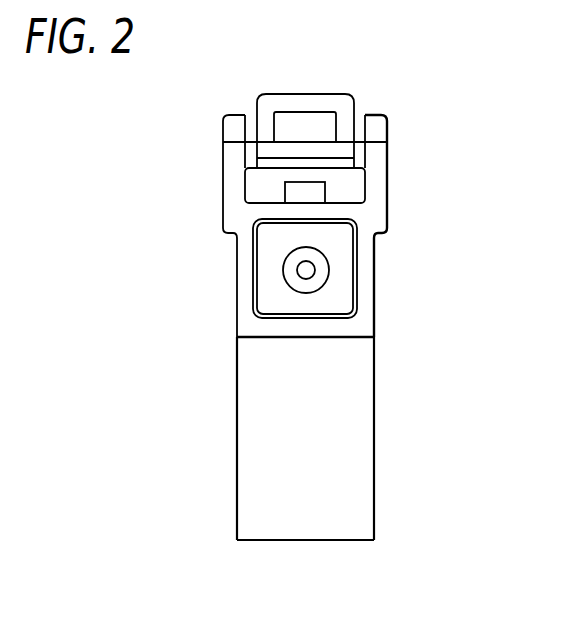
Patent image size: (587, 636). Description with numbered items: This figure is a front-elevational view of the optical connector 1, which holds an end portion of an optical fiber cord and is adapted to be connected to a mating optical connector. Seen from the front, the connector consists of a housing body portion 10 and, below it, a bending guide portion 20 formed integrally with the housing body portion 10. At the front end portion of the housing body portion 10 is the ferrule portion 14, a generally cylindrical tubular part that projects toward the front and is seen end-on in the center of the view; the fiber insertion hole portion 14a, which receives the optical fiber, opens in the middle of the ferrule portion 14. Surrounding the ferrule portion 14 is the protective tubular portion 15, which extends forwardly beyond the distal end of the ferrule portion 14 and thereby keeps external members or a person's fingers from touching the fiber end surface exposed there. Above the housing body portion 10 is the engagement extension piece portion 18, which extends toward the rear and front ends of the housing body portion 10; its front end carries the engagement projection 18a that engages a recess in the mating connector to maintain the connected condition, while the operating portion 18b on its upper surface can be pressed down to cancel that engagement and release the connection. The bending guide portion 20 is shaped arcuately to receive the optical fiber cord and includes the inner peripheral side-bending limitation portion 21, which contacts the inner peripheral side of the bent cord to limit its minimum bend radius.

The optical connector 1 is at (494, 228).
The housing body portion 10 is at (374, 315).
The ferrule portion 14 is at (322, 254).
The fiber insertion hole portion 14a is at (315, 270).
The protective tubular portion 15 is at (237, 262).
The engagement extension piece portion 18 is at (358, 187).
The engagement projection 18a is at (340, 156).
The operating portion 18b is at (305, 94).
The bending guide portion 20 is at (375, 435).
The inner peripheral side-bending limitation portion 21 is at (310, 533).